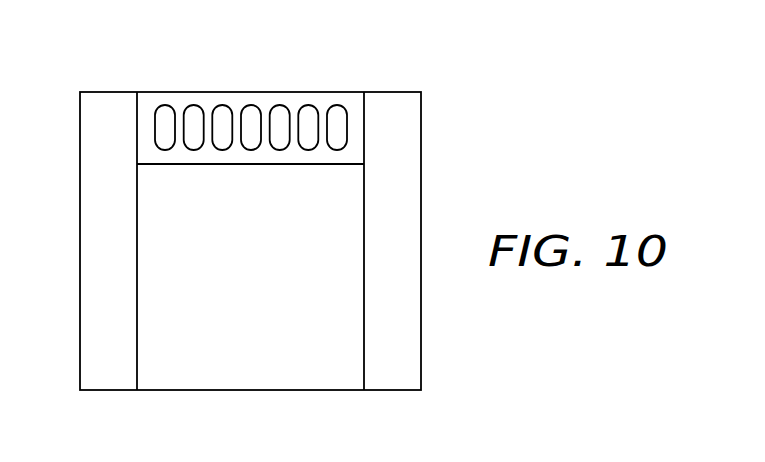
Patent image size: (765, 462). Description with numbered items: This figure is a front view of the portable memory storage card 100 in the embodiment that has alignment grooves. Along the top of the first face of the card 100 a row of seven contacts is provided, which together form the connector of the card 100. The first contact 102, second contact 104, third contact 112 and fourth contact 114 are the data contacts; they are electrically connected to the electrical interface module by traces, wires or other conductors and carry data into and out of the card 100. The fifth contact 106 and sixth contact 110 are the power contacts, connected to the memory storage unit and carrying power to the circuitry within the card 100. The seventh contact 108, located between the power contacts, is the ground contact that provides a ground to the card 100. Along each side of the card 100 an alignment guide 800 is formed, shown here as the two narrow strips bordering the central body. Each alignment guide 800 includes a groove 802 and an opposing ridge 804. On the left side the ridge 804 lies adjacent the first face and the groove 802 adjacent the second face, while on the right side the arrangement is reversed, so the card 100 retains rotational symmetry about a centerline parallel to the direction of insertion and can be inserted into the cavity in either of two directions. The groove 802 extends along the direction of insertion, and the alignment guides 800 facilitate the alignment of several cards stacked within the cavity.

The portable memory storage card 100 is at (467, 80).
The first contact 102 is at (163, 103).
The second contact 104 is at (193, 103).
The fifth contact 106 is at (221, 103).
The seventh contact 108 is at (250, 103).
The sixth contact 110 is at (278, 103).
The third contact 112 is at (307, 103).
The fourth contact 114 is at (335, 103).
The alignment guide 800 is at (117, 266).
The groove 802 is at (405, 199).
The ridge 804 is at (98, 326).